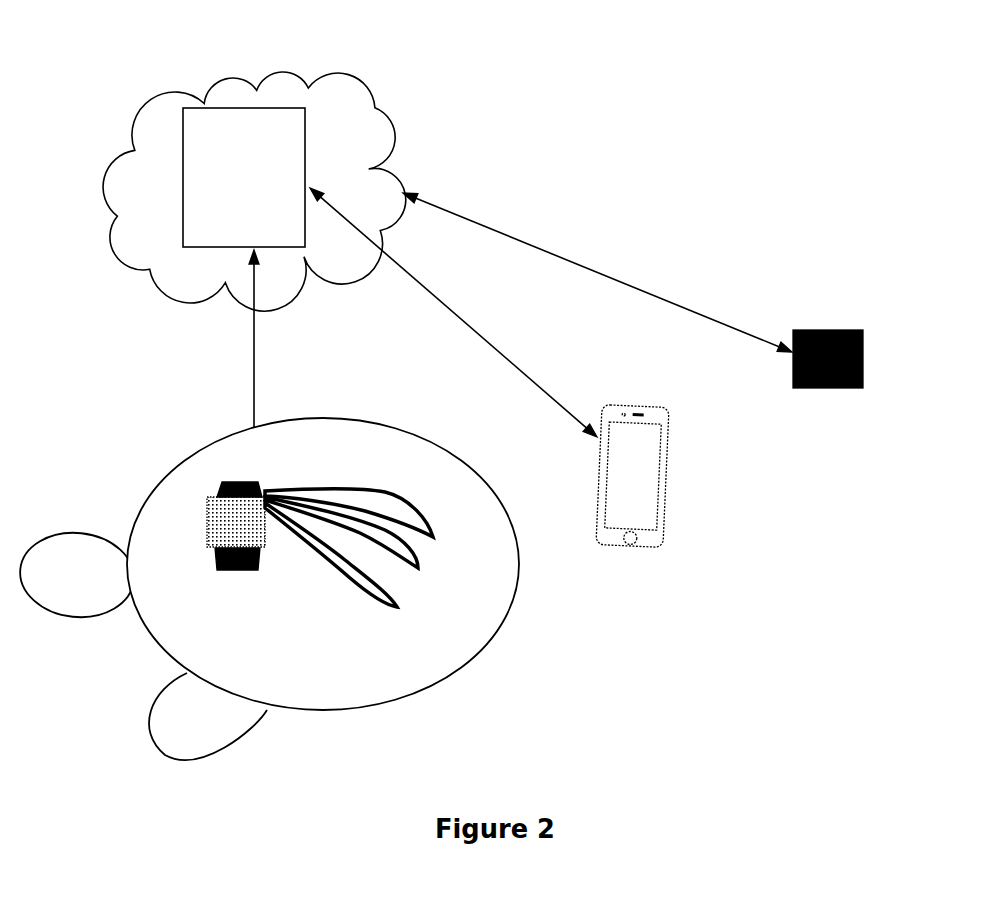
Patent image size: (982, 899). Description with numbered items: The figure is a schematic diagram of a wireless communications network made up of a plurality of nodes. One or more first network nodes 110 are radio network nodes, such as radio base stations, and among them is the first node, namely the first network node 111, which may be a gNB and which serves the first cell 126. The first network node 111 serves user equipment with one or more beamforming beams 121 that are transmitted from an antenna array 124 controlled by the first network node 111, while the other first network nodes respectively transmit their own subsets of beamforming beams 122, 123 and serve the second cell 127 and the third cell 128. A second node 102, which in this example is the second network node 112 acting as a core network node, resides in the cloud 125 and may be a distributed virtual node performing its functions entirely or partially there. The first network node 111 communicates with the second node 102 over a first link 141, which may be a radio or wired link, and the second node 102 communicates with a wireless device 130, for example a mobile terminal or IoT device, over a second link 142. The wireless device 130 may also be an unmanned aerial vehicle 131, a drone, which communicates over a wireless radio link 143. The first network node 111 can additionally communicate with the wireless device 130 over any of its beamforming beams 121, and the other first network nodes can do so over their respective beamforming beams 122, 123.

The second node 102 is at (244, 177).
The second network node 112 is at (244, 177).
The cloud 125 is at (233, 83).
The first link 141 is at (250, 375).
The second link 142 is at (448, 310).
The wireless radio link 143 is at (633, 288).
The unmanned aerial vehicle 131 is at (815, 390).
The wireless device 130 is at (603, 545).
The third cell 128 is at (75, 612).
The second cell 127 is at (163, 752).
The first cell 126 is at (293, 418).
The beamforming beams 121 is at (398, 500).
The beamforming beams 122 is at (418, 549).
The beamforming beams 123 is at (400, 593).
The first network nodes 110 is at (206, 560).
The first network node 111 is at (206, 560).
The antenna array 124 is at (218, 507).